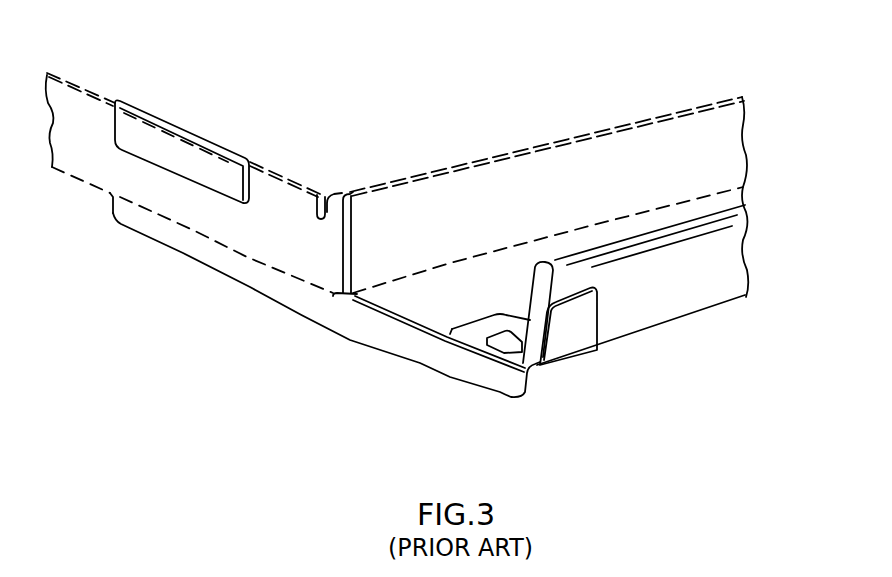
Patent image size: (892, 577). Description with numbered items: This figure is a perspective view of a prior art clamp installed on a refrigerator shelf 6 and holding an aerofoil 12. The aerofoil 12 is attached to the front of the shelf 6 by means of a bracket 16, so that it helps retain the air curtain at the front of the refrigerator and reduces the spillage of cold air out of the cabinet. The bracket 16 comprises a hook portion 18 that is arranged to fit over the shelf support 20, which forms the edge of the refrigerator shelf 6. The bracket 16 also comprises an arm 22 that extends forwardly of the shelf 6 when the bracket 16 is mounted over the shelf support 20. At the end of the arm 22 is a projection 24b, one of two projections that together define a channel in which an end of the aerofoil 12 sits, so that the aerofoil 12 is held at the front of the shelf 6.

The shelf 6 is at (553, 178).
The aerofoil 12 is at (695, 277).
The bracket 16 is at (244, 312).
The hook portion 18 is at (180, 157).
The shelf support 20 is at (263, 222).
The arm 22 is at (380, 330).
The projection 24b is at (568, 337).